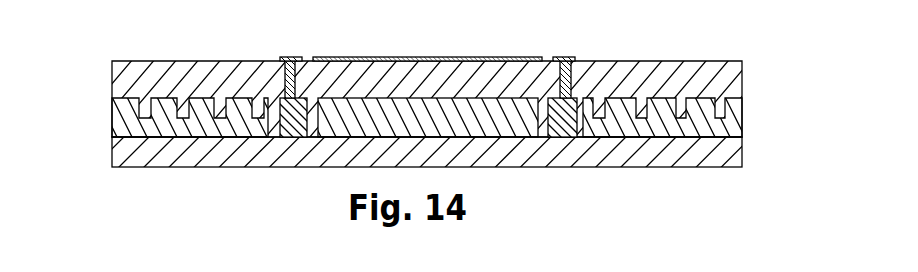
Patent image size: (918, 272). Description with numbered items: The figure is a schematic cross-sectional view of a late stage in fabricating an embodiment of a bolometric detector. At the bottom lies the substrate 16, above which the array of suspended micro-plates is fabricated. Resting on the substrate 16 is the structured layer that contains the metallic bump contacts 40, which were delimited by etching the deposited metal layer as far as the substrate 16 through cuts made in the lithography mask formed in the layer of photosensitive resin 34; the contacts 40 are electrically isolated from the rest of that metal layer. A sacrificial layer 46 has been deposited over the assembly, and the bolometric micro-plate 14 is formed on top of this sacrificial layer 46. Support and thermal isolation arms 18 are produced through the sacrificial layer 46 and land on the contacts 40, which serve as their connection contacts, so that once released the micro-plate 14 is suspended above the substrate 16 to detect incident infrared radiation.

The bolometric micro-plate 14 is at (419, 57).
The substrate 16 is at (733, 146).
The support and thermal isolation arms 18 is at (290, 57).
The layer of photosensitive resin 34 is at (735, 127).
The metallic bump contacts 40 is at (293, 137).
The sacrificial layer 46 is at (735, 75).